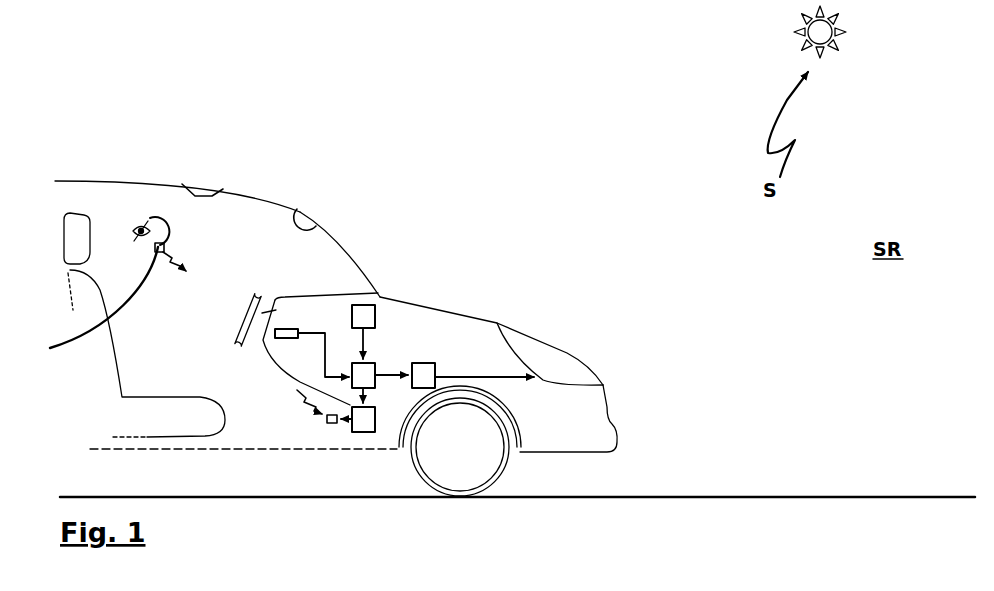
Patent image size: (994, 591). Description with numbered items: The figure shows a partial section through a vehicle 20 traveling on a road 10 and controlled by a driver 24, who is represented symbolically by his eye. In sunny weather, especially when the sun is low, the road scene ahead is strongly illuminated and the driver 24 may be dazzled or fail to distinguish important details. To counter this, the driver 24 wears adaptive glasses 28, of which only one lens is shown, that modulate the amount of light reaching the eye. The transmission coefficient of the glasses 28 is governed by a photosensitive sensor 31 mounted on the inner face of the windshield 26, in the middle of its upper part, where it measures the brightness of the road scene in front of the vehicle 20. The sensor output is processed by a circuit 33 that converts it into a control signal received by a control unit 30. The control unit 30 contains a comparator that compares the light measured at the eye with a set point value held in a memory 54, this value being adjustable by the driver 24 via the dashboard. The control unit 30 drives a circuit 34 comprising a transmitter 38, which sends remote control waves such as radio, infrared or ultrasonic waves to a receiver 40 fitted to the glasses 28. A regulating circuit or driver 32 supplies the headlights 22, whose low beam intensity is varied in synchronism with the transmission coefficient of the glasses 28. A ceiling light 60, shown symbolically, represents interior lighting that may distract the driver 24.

The road 10 is at (783, 497).
The vehicle 20 is at (482, 157).
The headlights 22 is at (567, 363).
The driver 24 is at (139, 226).
The windshield 26 is at (363, 267).
The adaptive glasses 28 is at (157, 217).
The control unit 30 is at (375, 387).
The photosensitive sensor 31 is at (310, 210).
The regulating circuit or driver 32 is at (413, 388).
The circuit 33 is at (375, 325).
The circuit for controlling the coefficient of transmission 34 is at (352, 432).
The transmitter 38 is at (327, 423).
The receiver 40 is at (92, 304).
The memory 54 is at (292, 328).
The ceiling light 60 is at (200, 182).